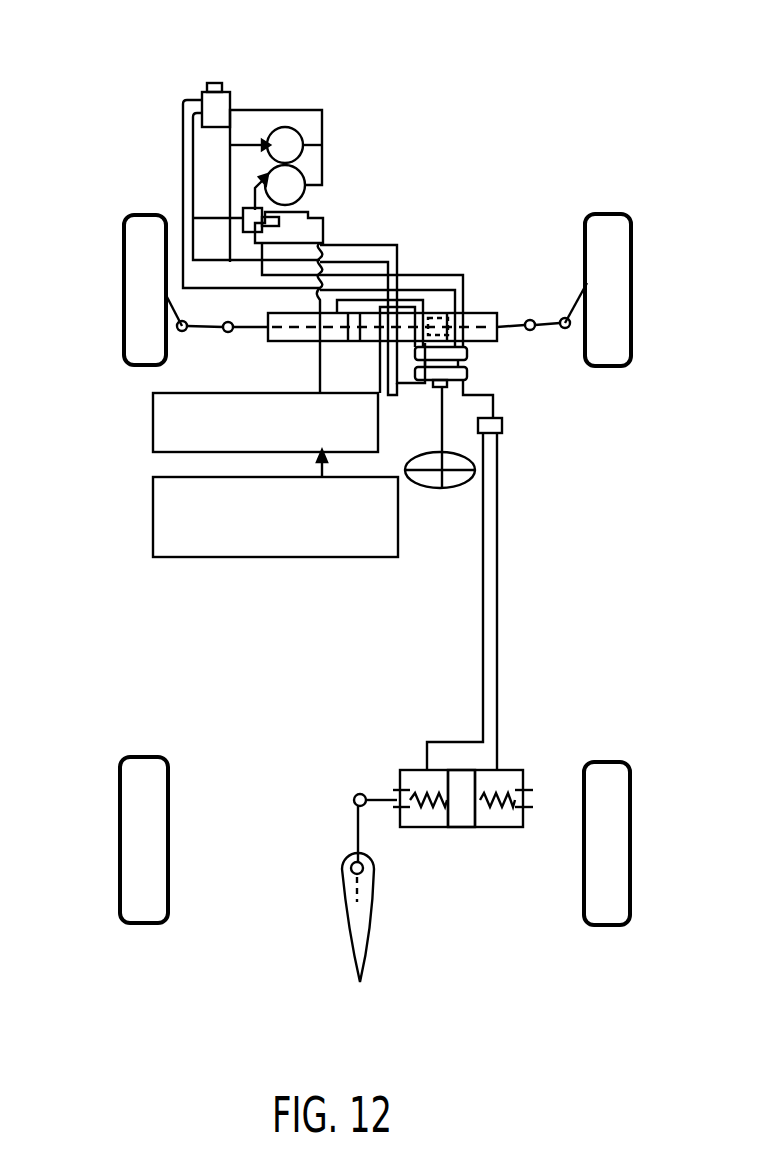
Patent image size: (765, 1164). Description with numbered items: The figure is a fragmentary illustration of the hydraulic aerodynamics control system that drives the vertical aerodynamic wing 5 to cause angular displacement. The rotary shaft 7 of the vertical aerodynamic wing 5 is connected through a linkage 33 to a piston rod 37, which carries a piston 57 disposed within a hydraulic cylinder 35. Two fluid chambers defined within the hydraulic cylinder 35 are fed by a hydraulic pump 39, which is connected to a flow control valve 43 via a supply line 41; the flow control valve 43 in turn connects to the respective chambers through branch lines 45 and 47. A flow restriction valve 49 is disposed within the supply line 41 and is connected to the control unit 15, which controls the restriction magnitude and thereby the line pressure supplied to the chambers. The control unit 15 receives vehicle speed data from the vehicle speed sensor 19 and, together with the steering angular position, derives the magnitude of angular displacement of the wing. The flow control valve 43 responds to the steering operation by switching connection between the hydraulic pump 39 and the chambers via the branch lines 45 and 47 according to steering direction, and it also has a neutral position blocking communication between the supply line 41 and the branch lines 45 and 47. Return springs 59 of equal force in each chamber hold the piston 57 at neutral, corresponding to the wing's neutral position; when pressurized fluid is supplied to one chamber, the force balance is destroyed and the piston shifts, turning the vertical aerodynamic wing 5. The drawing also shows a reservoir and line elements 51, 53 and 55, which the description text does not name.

The vertical aerodynamic wing 5 is at (373, 937).
The rotary shaft 7 is at (347, 884).
The control unit 15 is at (152, 432).
The vehicle speed sensor 19 is at (152, 523).
The linkage 33 is at (352, 832).
The hydraulic cylinder 35 is at (487, 830).
The piston rod 37 is at (373, 797).
The hydraulic pump 39 is at (303, 177).
The supply line 41 is at (258, 250).
The flow control valve 43 is at (467, 375).
The branch line 45 is at (481, 595).
The branch line 47 is at (499, 612).
The flow restriction valve 49 is at (245, 210).
The accumulator 51 is at (455, 492).
The return line 53 is at (192, 197).
The reservoir 55 is at (220, 108).
The piston 57 is at (467, 790).
The return springs 59 is at (418, 812).